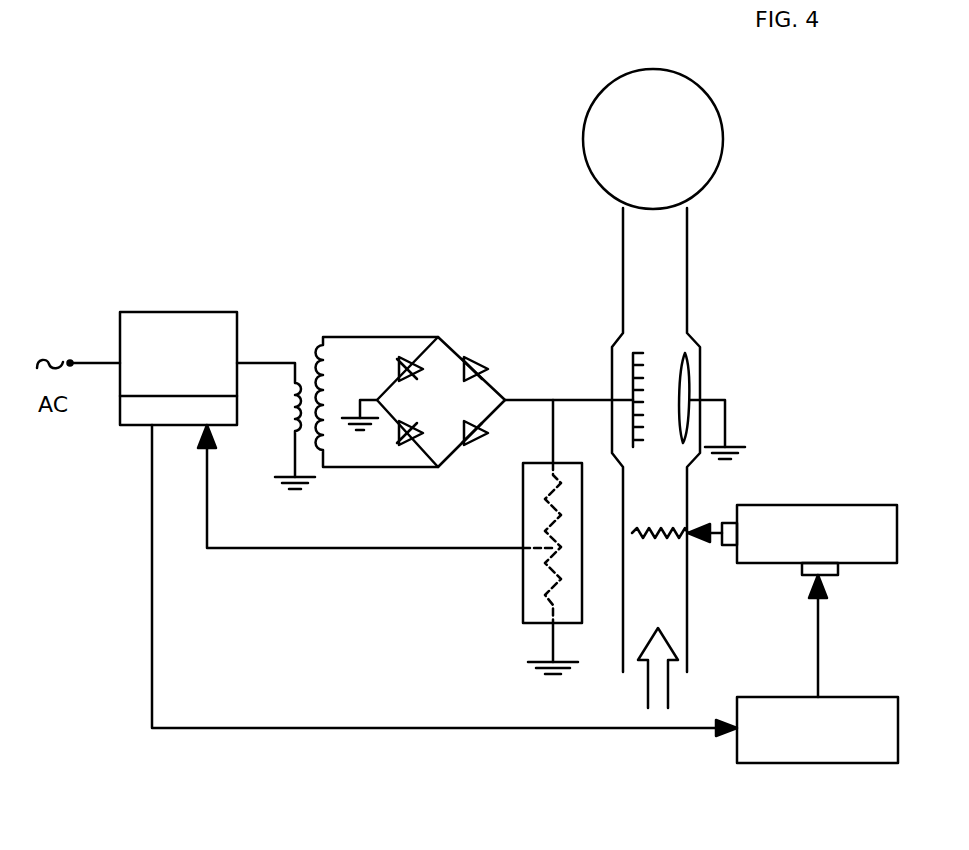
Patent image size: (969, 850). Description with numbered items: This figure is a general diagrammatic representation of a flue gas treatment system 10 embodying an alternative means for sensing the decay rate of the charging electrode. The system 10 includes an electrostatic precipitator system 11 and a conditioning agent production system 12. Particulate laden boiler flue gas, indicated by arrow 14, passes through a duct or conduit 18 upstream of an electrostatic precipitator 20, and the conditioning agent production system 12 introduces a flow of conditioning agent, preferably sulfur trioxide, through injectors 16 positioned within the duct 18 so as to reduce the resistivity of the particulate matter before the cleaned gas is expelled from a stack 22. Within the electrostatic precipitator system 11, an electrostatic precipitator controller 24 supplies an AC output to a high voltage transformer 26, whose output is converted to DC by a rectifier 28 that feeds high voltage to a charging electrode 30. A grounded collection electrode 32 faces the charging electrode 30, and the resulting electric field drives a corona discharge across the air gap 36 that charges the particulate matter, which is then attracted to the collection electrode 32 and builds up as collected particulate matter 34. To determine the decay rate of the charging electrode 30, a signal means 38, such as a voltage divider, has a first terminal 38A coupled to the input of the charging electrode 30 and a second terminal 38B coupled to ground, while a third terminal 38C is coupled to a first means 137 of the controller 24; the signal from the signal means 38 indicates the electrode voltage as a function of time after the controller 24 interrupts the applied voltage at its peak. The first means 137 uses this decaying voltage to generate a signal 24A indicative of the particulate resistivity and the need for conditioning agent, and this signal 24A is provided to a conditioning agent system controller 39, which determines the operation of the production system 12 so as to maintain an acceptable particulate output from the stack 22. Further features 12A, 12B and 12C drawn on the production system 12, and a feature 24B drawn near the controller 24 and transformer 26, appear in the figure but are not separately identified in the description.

The flue gas treatment system 10 is at (238, 135).
The electrostatic precipitator system 11 is at (318, 178).
The conditioning agent production system 12 is at (805, 505).
The control input terminal 12A is at (838, 570).
The output terminal 12B is at (722, 523).
The control line 12C is at (817, 640).
The flow of particulate laden boiler flue gas 14 is at (670, 688).
The injectors 16 is at (675, 540).
The duct or conduit 18 is at (624, 527).
The electrostatic precipitator 20 is at (702, 393).
The stack 22 is at (585, 125).
The electrostatic precipitator controller 24 is at (153, 312).
The conditioning agent demand signal 24A is at (152, 603).
The output line 24B is at (290, 363).
The high voltage transformer 26 is at (313, 366).
The rectifier 28 is at (458, 345).
The charging electrode 30 is at (630, 385).
The collection electrode 32 is at (690, 380).
The collected particulate matter 34 is at (683, 332).
The air gap 36 is at (660, 365).
The signal means 38 is at (523, 533).
The first terminal 38A is at (550, 401).
The second terminal 38B is at (552, 645).
The third terminal 38C is at (342, 546).
The conditioning agent system controller 39 is at (847, 743).
The first means 137 is at (120, 408).